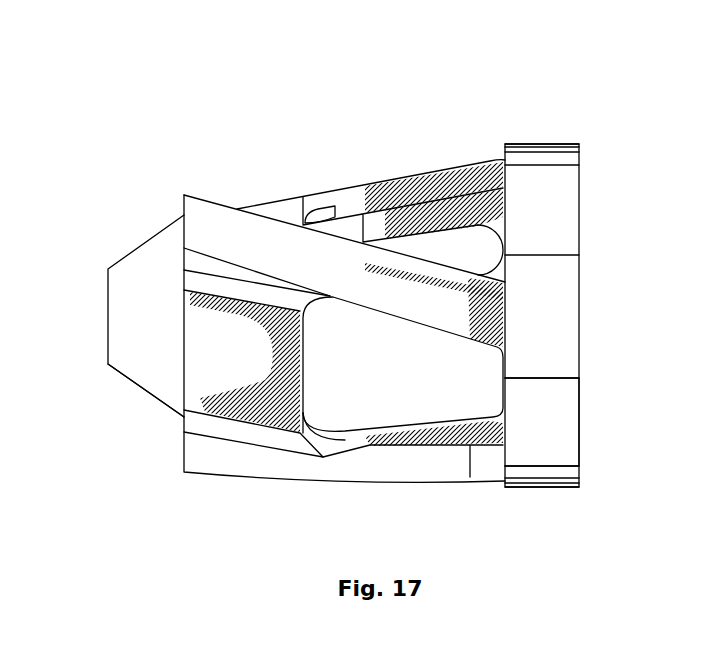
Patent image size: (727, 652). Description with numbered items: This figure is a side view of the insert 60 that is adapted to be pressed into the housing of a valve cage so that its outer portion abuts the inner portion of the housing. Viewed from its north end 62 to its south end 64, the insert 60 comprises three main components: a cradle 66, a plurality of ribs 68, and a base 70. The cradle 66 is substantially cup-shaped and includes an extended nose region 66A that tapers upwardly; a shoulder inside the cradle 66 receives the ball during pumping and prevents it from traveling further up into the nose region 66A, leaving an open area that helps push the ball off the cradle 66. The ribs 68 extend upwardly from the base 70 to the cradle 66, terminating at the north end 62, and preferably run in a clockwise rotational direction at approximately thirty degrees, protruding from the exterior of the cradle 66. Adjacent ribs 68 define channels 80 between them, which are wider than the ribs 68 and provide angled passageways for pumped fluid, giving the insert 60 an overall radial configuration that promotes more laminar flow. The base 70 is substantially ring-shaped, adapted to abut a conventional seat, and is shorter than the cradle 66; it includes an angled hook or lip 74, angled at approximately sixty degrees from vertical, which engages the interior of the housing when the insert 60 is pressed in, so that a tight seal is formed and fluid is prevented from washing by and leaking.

The insert 60 is at (294, 79).
The north end 62 is at (107, 307).
The south end 64 is at (582, 344).
The cradle 66 is at (193, 400).
The nose region 66A is at (143, 378).
The ribs 68 is at (365, 191).
The base 70 is at (567, 453).
The lip 74 is at (503, 147).
The channels 80 is at (478, 255).